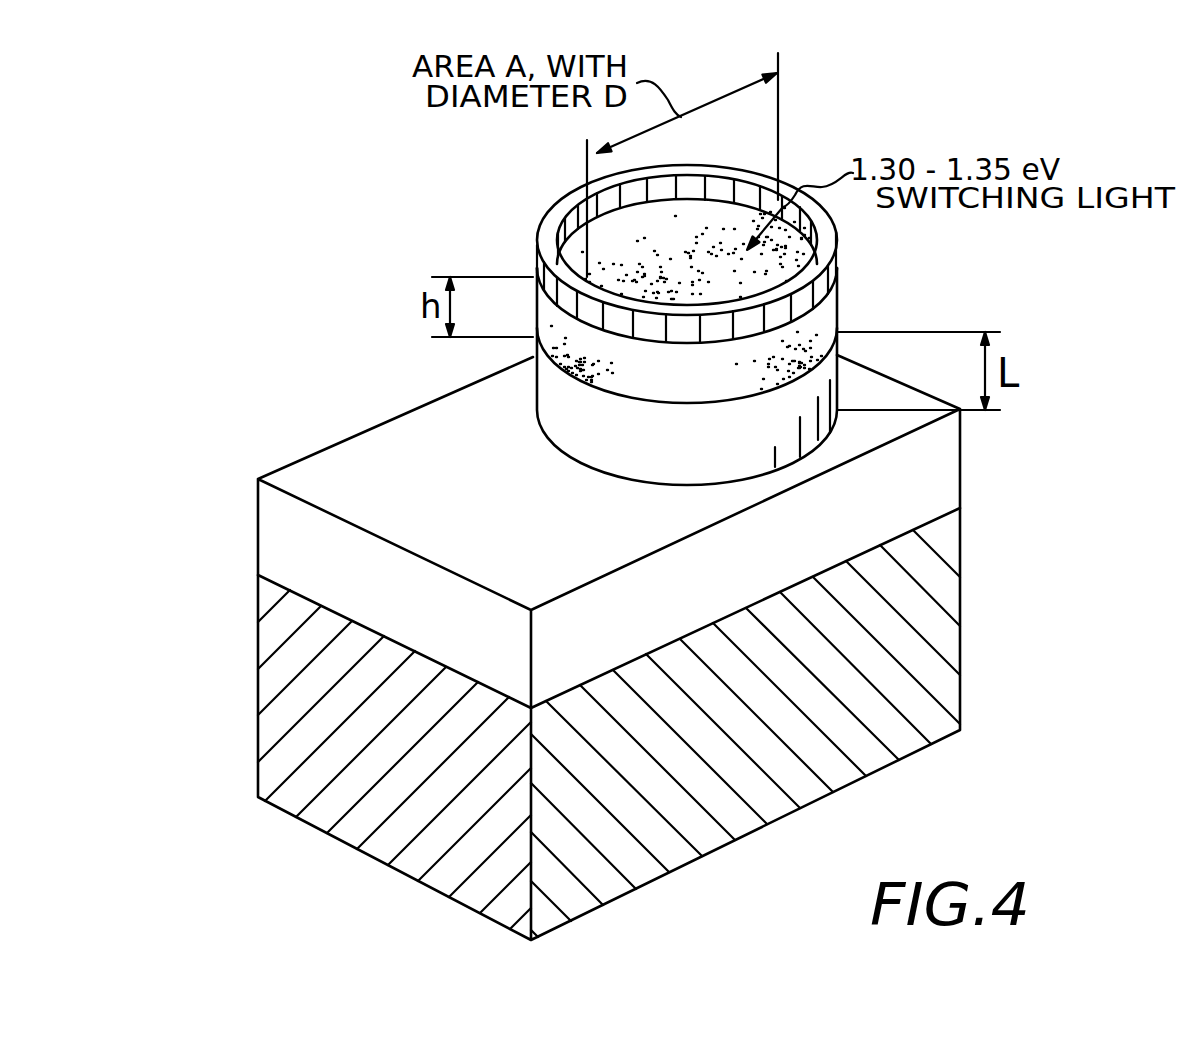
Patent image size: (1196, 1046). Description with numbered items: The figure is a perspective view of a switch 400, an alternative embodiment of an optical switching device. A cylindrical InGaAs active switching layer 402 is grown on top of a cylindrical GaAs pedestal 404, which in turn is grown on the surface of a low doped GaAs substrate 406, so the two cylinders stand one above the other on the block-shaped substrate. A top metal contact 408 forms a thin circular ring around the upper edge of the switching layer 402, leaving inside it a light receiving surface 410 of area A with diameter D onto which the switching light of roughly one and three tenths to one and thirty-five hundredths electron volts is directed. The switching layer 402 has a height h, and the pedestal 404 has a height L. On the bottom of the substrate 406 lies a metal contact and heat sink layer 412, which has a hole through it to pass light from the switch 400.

The switch 400 is at (352, 303).
The cylindrical InGaAs active switching layer 402 is at (840, 318).
The cylindrical GaAs pedestal 404 is at (535, 400).
The low doped GaAs substrate 406 is at (268, 518).
The top metal contact 408 is at (840, 240).
The light receiving surface 410 is at (580, 248).
The metal contact and heat sink layer 412 is at (268, 688).